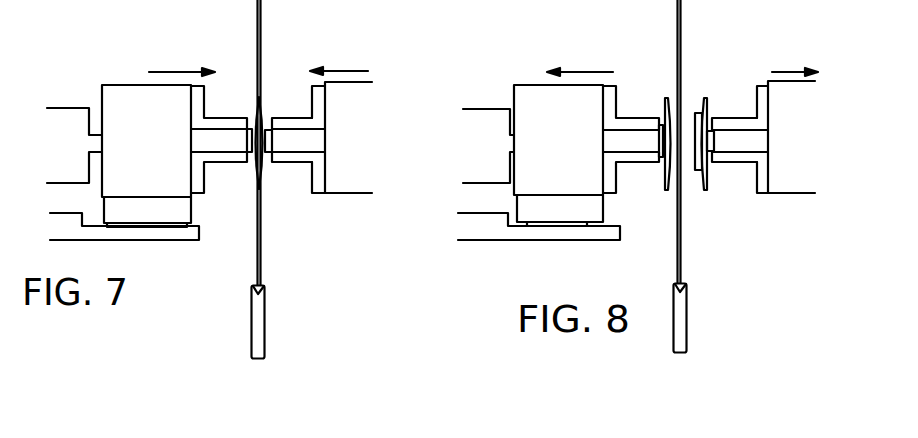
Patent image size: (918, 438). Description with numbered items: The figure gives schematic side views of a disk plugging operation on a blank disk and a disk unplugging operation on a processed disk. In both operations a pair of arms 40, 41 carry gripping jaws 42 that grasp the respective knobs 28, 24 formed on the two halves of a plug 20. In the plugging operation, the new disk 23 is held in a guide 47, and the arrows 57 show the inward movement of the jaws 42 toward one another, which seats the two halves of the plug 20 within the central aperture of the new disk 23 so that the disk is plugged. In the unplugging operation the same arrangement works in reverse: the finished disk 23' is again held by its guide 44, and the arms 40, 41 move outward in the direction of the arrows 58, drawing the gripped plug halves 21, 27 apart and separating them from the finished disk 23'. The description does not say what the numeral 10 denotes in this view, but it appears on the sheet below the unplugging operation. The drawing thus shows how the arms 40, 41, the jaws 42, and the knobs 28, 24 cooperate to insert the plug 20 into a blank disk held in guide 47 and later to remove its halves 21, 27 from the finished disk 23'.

In FIG. 7, the arm 40 is at (125, 85).
In FIG. 8, the arm 40 is at (536, 68).
In FIG. 7, the arrows 57 is at (178, 70).
In FIG. 7, the plug 20 is at (247, 102).
In FIG. 7, the new disk 23 is at (289, 142).
In FIG. 8, the finished disk 23' is at (708, 141).
In FIG. 7, the knob 28 is at (244, 146).
In FIG. 7, the knob 24 is at (282, 146).
In FIG. 7, the gripping jaws 42 is at (287, 117).
In FIG. 7, the arm 41 is at (357, 92).
In FIG. 8, the arm 41 is at (797, 180).
In FIG. 7, the guide 47 is at (259, 288).
In FIG. 8, the arrows 58 is at (790, 55).
In FIG. 8, the plug half 27 is at (664, 108).
In FIG. 8, the plug half 21 is at (706, 107).
In FIG. 8, the wire holder block 44 is at (688, 283).
In FIG. 8, the apparatus 10 is at (585, 437).